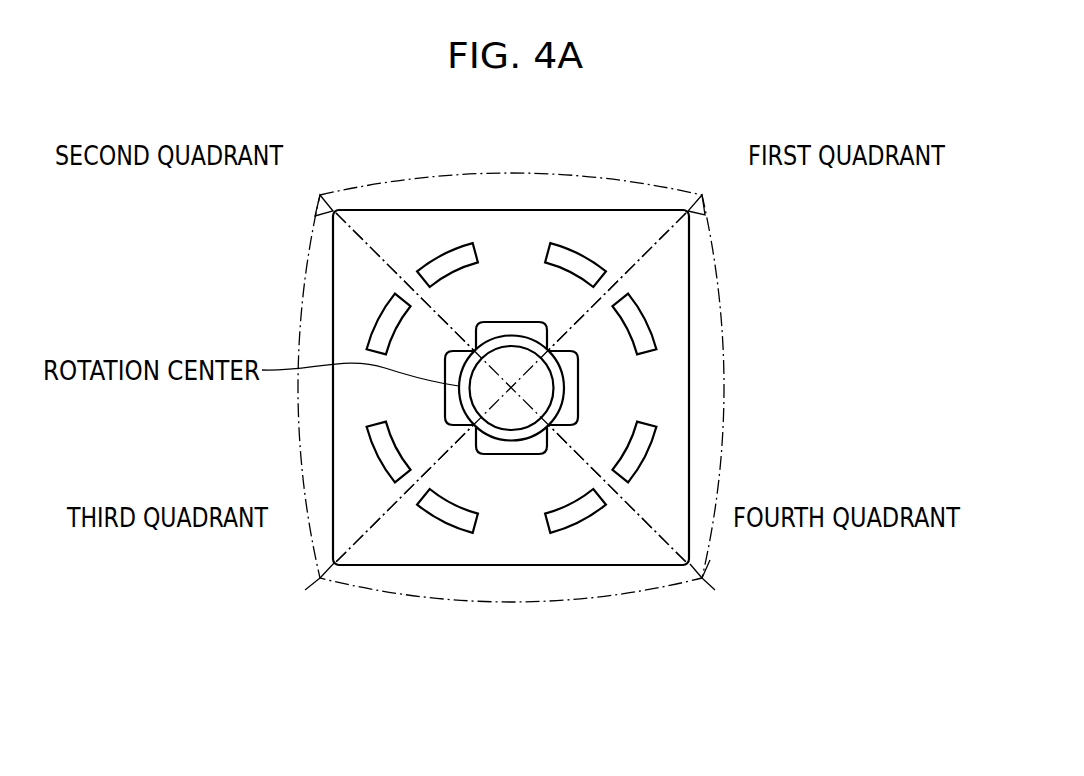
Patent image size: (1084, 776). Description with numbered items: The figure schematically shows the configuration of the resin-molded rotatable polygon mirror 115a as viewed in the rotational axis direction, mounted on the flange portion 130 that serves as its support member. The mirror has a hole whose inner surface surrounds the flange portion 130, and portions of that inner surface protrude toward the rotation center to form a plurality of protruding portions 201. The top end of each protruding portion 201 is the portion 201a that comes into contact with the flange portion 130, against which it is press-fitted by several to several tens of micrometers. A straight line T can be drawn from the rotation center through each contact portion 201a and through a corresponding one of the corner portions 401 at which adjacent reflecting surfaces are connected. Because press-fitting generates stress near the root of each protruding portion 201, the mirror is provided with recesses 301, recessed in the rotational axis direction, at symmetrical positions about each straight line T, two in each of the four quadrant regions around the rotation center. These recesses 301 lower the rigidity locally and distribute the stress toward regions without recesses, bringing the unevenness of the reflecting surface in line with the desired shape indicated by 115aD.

The rotatable polygon mirror 115a is at (553, 208).
The desired shape of the reflecting surface 115aD is at (312, 566).
The flange portion 130 is at (448, 393).
The protruding portions 201 is at (477, 350).
The contact portion of protruding portion 201a is at (502, 345).
The recesses 301 is at (433, 262).
The corner portions 401 is at (333, 212).
The straight line T is at (320, 193).